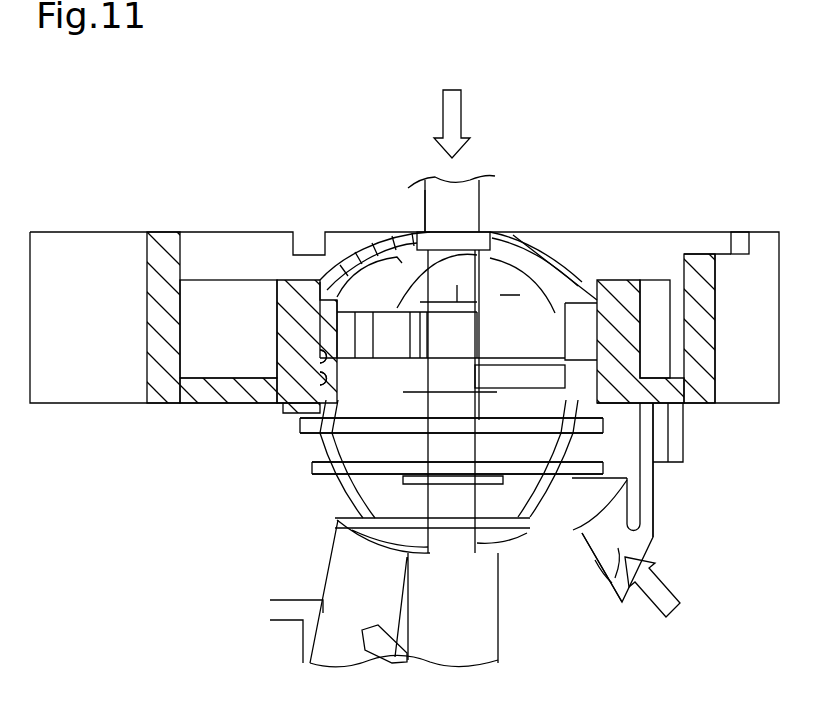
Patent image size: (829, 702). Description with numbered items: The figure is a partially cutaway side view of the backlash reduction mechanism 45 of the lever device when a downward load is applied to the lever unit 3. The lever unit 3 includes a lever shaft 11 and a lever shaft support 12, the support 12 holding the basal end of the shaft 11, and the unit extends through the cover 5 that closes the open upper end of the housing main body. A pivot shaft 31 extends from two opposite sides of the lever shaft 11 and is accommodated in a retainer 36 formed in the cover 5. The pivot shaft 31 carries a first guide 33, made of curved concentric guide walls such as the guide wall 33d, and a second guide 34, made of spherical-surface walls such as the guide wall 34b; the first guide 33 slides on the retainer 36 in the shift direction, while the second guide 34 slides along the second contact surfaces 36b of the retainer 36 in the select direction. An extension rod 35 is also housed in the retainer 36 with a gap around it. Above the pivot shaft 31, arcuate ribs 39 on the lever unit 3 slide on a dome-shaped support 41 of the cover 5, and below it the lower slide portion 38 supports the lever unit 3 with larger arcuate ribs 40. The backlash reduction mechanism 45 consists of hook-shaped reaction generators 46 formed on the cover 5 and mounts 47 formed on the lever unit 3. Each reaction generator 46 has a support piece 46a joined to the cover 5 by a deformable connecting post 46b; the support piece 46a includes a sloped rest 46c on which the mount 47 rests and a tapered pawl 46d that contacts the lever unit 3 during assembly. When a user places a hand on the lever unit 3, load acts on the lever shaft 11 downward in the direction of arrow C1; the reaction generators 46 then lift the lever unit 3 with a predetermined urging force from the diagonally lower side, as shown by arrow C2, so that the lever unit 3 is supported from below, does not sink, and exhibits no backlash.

The cover 5 is at (164, 232).
The lever unit 3 is at (577, 182).
The lever shaft 11 is at (479, 217).
The lever shaft support 12 is at (553, 282).
The lower slide portion 38 is at (395, 275).
The support 41 is at (335, 258).
The pivot shaft 31 is at (348, 282).
The ribs 39 is at (395, 335).
The extension rod 35 is at (560, 350).
The retainer 36 is at (320, 352).
The second contact surfaces 36b is at (320, 376).
The second guide 34 is at (330, 422).
The guide wall 34b is at (451, 425).
The first guide 33 is at (330, 436).
The guide wall 33d is at (457, 468).
The ribs 40 is at (347, 495).
The reaction generators 46 is at (653, 545).
The support piece 46a is at (608, 588).
The connecting post 46b is at (653, 482).
The sloped rest 46c is at (603, 506).
The pawl 46d is at (592, 572).
The mounts 47 is at (593, 560).
The backlash reduction mechanism 45 is at (673, 634).
The arrow C1 is at (462, 106).
The arrow C2 is at (673, 588).